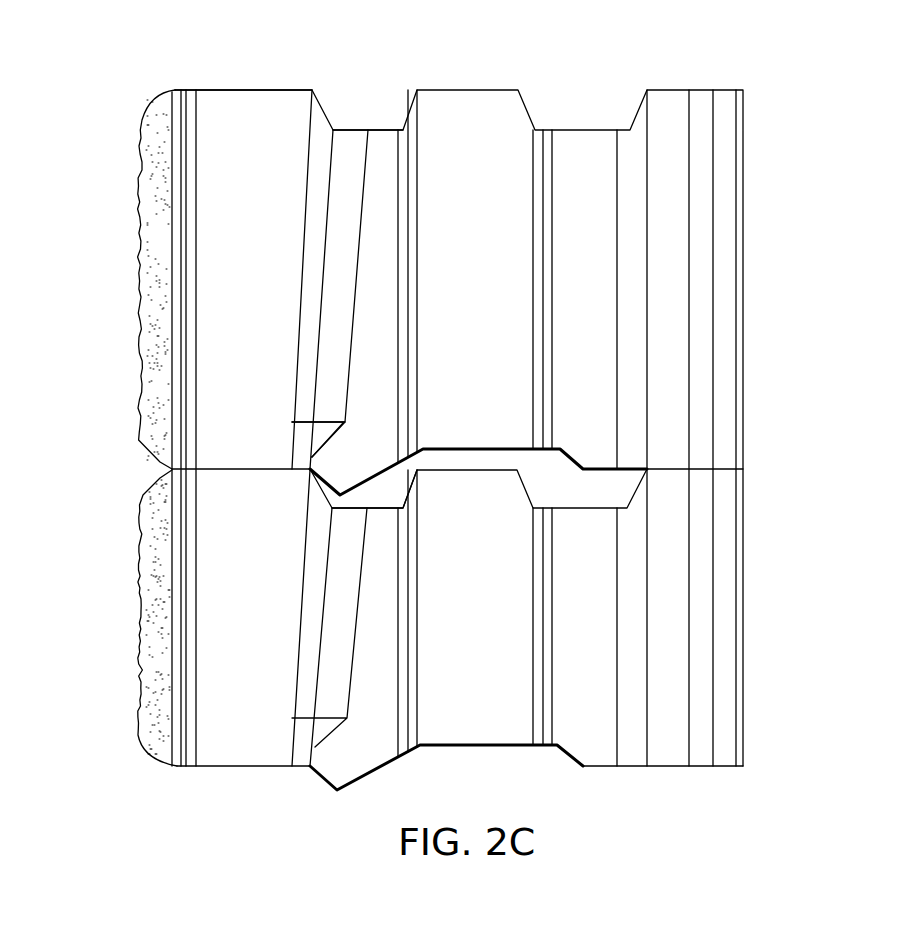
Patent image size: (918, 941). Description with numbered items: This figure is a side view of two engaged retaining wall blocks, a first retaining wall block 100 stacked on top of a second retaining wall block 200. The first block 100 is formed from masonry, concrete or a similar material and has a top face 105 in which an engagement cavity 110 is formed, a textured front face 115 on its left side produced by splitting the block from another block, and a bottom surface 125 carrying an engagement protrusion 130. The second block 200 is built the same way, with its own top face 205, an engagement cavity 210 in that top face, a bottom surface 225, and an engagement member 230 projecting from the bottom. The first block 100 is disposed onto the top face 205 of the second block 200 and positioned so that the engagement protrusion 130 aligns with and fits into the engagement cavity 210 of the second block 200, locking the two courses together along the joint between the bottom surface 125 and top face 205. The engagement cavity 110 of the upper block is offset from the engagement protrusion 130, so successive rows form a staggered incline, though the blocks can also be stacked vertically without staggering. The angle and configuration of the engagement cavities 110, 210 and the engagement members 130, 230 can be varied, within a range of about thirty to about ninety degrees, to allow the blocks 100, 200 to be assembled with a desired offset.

The retaining wall block 100 is at (110, 292).
The top face 105 is at (255, 89).
The engagement cavity 110 is at (353, 129).
The textured front face 115 is at (138, 243).
The bottom surface 125 is at (232, 470).
The engagement protrusion 130 is at (335, 462).
The second retaining wall block 200 is at (110, 608).
The top face 205 is at (698, 466).
The engagement cavity 210 is at (352, 508).
The bottom surface 225 is at (238, 767).
The engagement member 230 is at (322, 784).